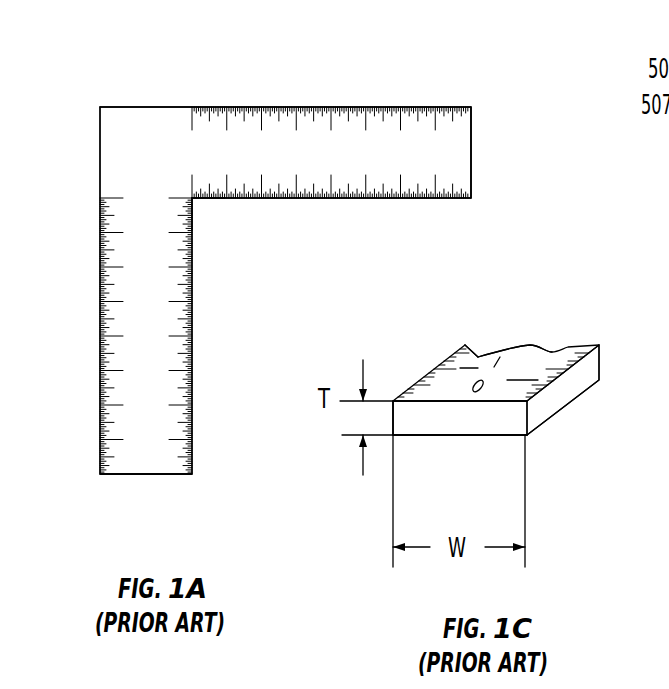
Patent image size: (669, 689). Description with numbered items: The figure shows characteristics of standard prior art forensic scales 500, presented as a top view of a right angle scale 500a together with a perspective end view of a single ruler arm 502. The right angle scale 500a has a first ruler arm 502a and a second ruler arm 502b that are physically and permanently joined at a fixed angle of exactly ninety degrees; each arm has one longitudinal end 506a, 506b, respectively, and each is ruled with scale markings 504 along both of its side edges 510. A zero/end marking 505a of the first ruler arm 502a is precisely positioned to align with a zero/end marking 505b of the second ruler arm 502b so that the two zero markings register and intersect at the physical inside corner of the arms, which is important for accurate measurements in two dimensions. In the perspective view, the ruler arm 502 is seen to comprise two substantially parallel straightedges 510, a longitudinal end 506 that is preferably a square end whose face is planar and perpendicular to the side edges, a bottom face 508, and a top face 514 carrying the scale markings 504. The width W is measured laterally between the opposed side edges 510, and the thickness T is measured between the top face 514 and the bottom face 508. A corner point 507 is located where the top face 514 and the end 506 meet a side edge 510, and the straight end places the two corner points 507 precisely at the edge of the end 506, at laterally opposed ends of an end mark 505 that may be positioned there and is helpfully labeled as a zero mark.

In FIG. 1A, the right angle scale 500a is at (273, 283).
In FIG. 1C, the scale 500 is at (461, 370).
In FIG. 1A, the first ruler arm 502a is at (312, 137).
In FIG. 1A, the second ruler arm 502b is at (130, 285).
In FIG. 1C, the ruler arm 502 is at (481, 325).
In FIG. 1A, the scale markings 504 is at (263, 123).
In FIG. 1C, the scale markings 504 is at (458, 350).
In FIG. 1A, the zero/end marking of the first ruler arm 505a is at (188, 197).
In FIG. 1A, the zero/end marking of the second ruler arm 505b is at (188, 186).
In FIG. 1C, the end mark 505 is at (465, 395).
In FIG. 1A, the longitudinal end of the first ruler arm 506a is at (472, 132).
In FIG. 1A, the longitudinal end of the second ruler arm 506b is at (140, 474).
In FIG. 1C, the longitudinal end 506 is at (441, 418).
In FIG. 1C, the corner point 507 is at (394, 400).
In FIG. 1C, the bottom face 508 is at (480, 437).
In FIG. 1A, the side edges 510 is at (436, 107).
In FIG. 1C, the side edges 510 is at (573, 387).
In FIG. 1C, the top face 514 is at (534, 352).